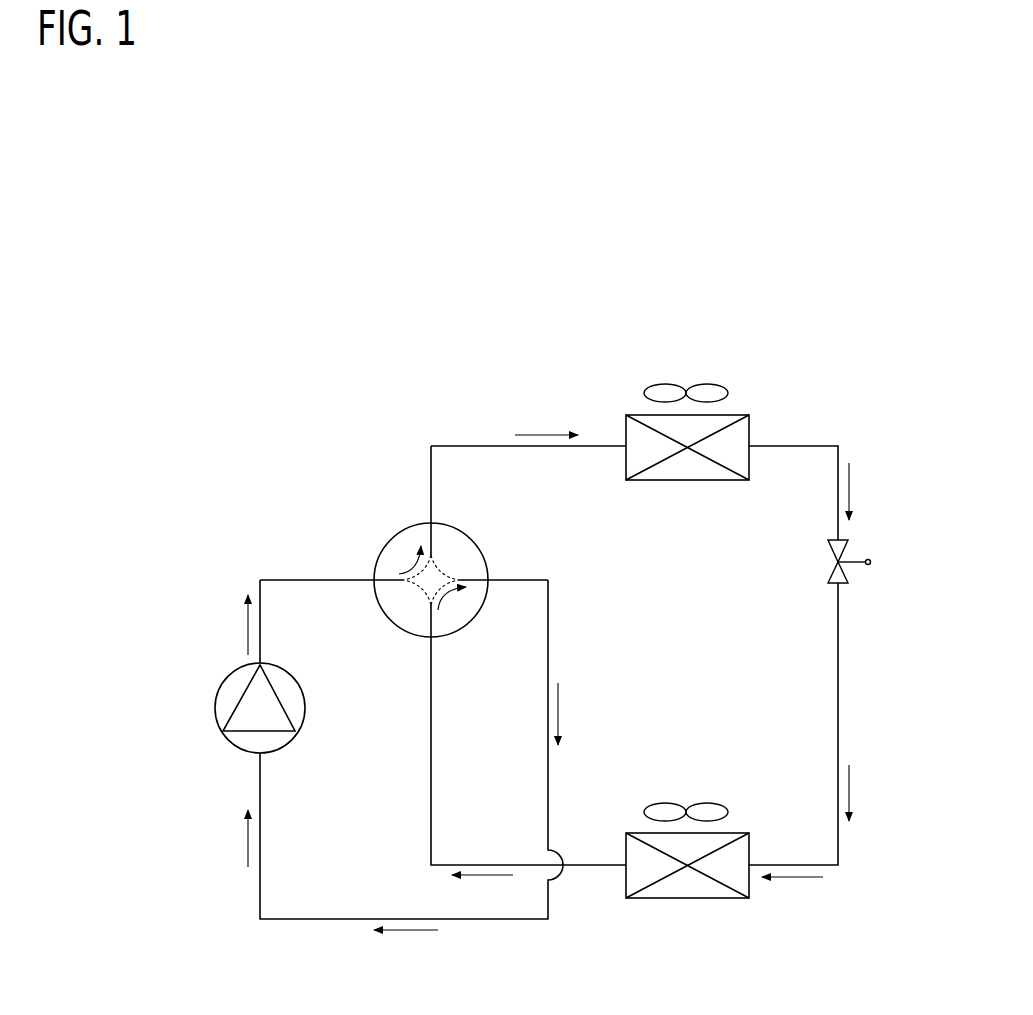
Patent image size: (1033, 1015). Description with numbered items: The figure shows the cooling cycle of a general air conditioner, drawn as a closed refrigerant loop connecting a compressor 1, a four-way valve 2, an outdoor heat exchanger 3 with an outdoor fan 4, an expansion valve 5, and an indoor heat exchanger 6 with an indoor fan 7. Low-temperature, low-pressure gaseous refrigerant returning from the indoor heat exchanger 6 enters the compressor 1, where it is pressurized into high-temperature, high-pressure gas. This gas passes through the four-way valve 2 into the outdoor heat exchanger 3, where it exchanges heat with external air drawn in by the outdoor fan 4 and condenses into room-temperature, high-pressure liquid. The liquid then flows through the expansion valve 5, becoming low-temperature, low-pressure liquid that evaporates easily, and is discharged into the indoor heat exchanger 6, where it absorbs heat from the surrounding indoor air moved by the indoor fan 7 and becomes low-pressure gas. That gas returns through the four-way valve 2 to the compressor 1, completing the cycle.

The compressor 1 is at (227, 678).
The four-way valve 2 is at (398, 547).
The outdoor heat exchanger 3 is at (738, 437).
The outdoor fan 4 is at (711, 389).
The expansion valve 5 is at (845, 575).
The indoor heat exchanger 6 is at (692, 887).
The indoor fan 7 is at (706, 808).